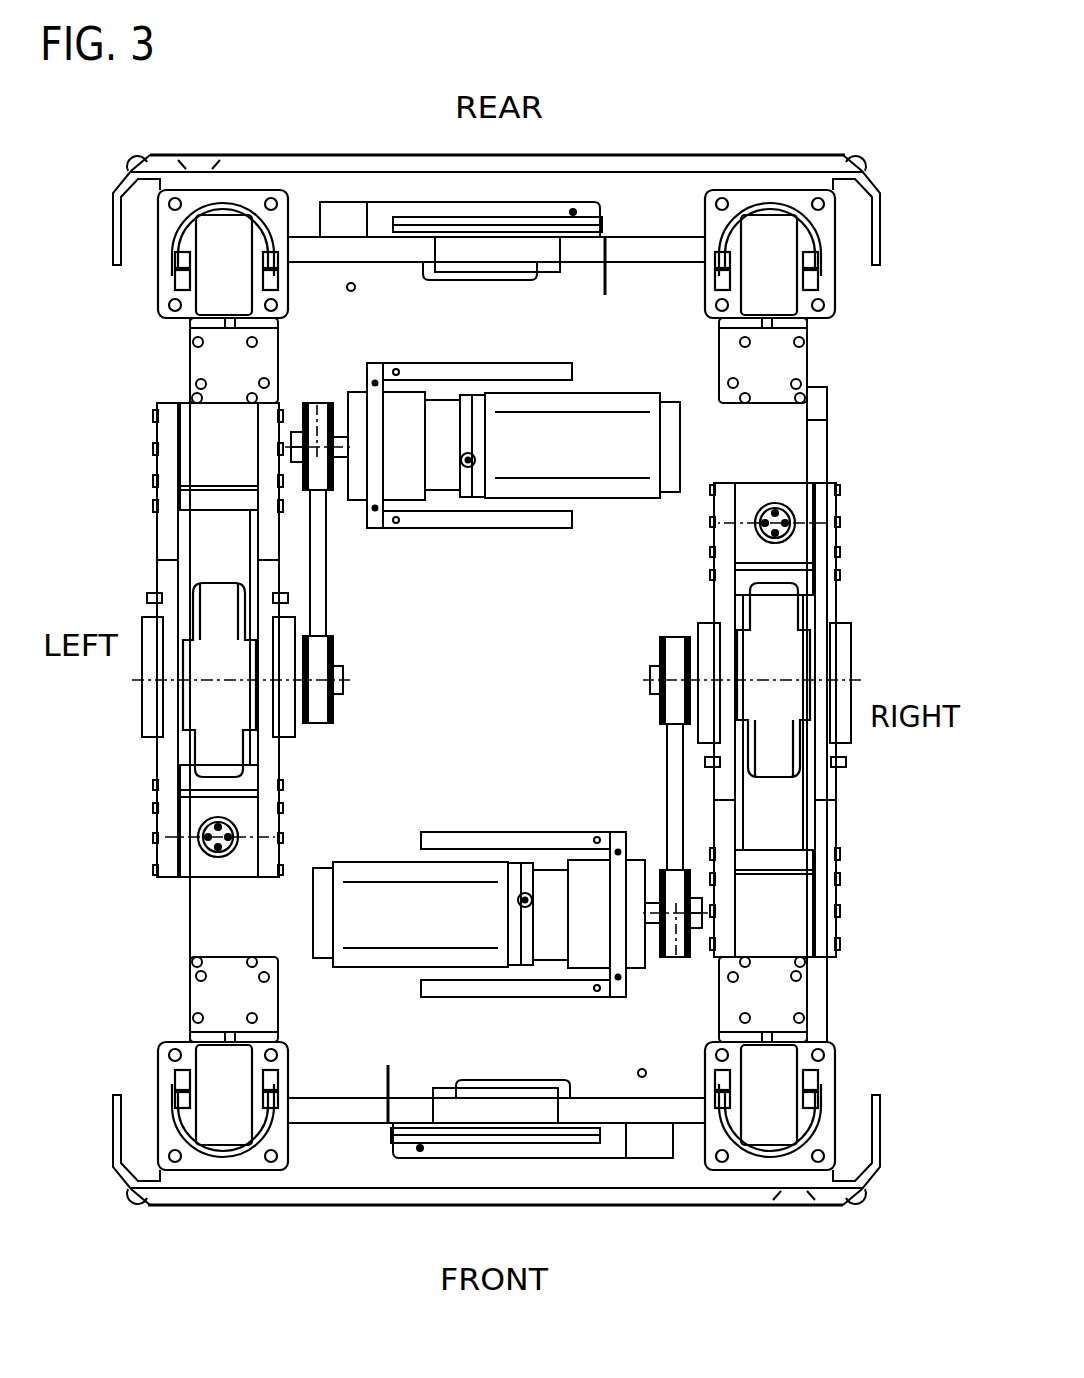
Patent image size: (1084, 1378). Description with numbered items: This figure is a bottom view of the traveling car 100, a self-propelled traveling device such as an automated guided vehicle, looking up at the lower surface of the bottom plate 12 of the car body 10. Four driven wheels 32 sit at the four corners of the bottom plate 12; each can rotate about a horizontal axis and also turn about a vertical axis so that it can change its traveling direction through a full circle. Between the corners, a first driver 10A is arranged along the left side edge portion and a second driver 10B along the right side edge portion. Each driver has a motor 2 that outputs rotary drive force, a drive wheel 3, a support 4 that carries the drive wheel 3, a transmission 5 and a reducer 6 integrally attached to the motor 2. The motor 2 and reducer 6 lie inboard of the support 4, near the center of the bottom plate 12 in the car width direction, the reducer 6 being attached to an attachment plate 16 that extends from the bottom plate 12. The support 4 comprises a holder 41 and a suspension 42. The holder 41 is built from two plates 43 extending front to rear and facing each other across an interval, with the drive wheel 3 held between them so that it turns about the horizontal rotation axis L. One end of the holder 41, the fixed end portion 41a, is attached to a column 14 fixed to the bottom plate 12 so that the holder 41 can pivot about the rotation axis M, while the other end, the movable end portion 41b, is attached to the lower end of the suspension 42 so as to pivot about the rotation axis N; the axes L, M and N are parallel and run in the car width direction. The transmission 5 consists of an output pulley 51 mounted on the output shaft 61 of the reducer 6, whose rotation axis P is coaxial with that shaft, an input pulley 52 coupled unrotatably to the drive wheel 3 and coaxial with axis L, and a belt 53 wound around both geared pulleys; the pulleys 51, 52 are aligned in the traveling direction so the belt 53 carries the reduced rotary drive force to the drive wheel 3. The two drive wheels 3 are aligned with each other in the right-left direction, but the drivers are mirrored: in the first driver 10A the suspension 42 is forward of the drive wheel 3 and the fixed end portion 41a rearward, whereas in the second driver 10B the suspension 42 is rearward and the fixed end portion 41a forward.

The traveling car 100 is at (862, 110).
The body frame 10 is at (360, 155).
The first driver 10A is at (112, 929).
The second driver 10B is at (893, 430).
The bottom plate 12 is at (514, 699).
The column 14 is at (203, 393).
The attachment plate 16 is at (373, 363).
The motor 2 is at (631, 381).
The drive wheel 3 is at (192, 725).
The support 4 is at (308, 763).
The transmission 5 is at (377, 608).
The reducer 6 is at (448, 514).
The driven wheel 32 is at (225, 220).
The holder 41 is at (150, 588).
The fixed end portion 41a is at (182, 438).
The movable end portion 41b is at (165, 850).
The suspension 42 is at (212, 895).
The plate 43 is at (253, 572).
The output pulley 51 is at (335, 407).
The input pulley 52 is at (333, 718).
The belt 53 is at (333, 612).
The output shaft 61 is at (337, 470).
The rotation axis M is at (208, 447).
The rotation axis N is at (193, 837).
The rotation axis L is at (160, 715).
The rotation axis P is at (317, 405).